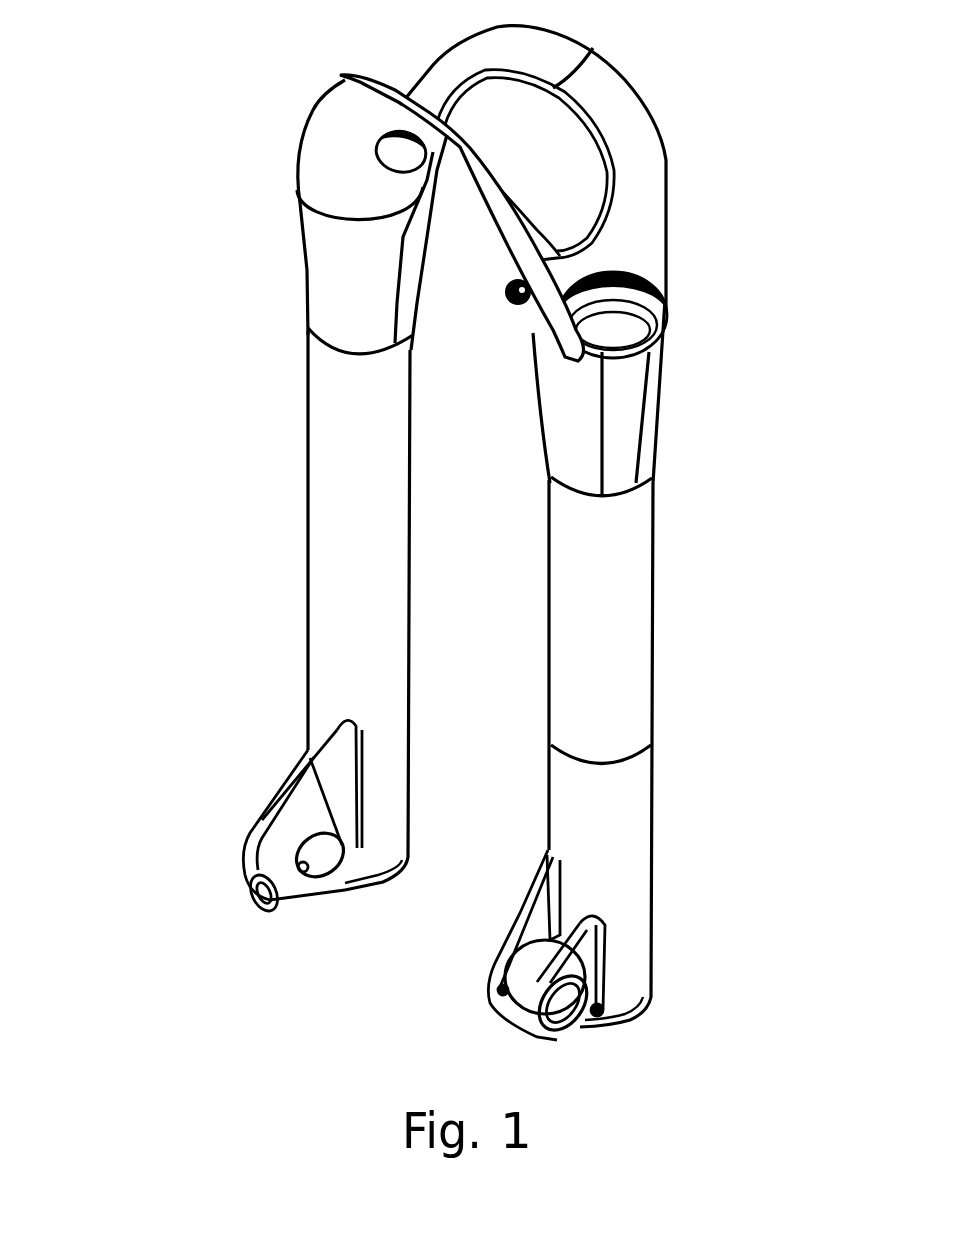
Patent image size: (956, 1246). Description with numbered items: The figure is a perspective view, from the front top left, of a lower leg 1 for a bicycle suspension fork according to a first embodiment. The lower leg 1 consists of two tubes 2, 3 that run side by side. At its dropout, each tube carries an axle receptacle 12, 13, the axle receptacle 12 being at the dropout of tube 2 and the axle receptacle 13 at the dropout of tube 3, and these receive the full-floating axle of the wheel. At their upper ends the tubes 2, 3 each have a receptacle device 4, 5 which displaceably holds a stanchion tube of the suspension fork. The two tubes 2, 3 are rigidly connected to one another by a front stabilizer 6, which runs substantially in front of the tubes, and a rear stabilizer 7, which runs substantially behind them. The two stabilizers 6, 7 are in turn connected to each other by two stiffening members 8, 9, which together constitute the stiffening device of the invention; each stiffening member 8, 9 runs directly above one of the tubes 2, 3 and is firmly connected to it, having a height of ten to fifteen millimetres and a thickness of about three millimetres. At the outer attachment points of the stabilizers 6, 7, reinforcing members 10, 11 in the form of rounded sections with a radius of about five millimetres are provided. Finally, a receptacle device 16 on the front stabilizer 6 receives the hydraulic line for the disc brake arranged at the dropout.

The lower leg 1 is at (180, 483).
The tube 2 is at (340, 617).
The tube 3 is at (618, 635).
The receptacle device for stanchion tube 4 is at (390, 133).
The receptacle device for stanchion tube 5 is at (615, 335).
The front stabilizer 6 is at (337, 137).
The rear stabilizer 7 is at (633, 122).
The stiffening member 8 is at (398, 189).
The stiffening member 9 is at (583, 258).
The reinforcing member 10 is at (297, 187).
The reinforcing member 11 is at (572, 345).
The axle receptacle 12 is at (258, 815).
The axle receptacle 13 is at (567, 1037).
The receptacle for adjusting device 16 is at (512, 308).